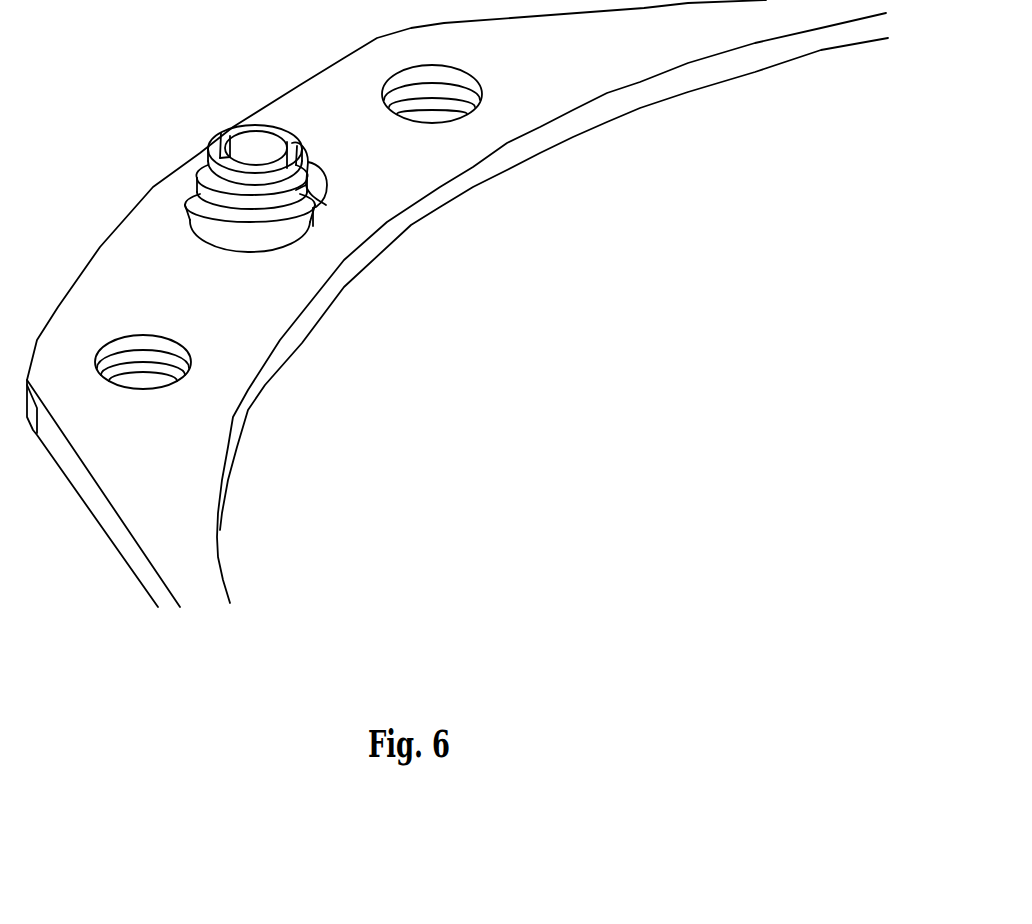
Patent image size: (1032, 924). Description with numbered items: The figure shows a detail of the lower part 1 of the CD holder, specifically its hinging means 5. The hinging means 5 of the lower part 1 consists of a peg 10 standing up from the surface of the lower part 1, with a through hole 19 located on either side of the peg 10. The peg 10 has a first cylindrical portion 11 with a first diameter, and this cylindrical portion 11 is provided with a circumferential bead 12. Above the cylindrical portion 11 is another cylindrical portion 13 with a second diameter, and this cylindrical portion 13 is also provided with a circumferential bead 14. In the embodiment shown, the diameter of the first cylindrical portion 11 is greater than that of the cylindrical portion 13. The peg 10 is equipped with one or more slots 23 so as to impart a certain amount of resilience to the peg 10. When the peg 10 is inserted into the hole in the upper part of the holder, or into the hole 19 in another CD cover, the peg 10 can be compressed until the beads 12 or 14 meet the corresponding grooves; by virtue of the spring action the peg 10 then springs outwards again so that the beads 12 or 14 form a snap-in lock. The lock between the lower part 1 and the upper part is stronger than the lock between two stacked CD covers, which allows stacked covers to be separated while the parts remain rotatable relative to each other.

The lower part 1 is at (566, 60).
The hinging means 5 is at (250, 289).
The peg 10 is at (297, 168).
The first cylindrical portion 11 is at (213, 233).
The circumferential bead 12 is at (188, 202).
The cylindrical portion 13 is at (265, 206).
The circumferential bead 14 is at (288, 186).
The through hole 19 is at (462, 112).
The slot 23 is at (222, 143).